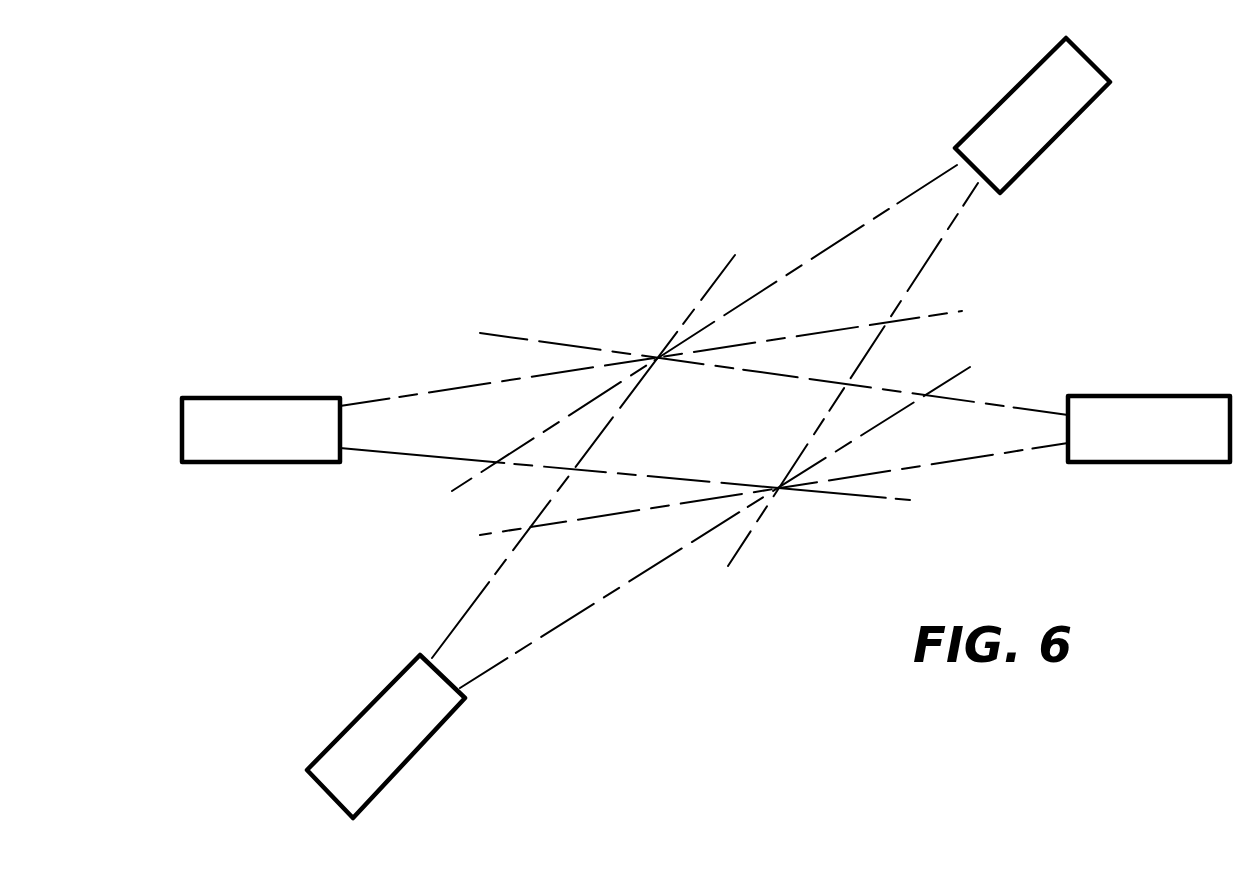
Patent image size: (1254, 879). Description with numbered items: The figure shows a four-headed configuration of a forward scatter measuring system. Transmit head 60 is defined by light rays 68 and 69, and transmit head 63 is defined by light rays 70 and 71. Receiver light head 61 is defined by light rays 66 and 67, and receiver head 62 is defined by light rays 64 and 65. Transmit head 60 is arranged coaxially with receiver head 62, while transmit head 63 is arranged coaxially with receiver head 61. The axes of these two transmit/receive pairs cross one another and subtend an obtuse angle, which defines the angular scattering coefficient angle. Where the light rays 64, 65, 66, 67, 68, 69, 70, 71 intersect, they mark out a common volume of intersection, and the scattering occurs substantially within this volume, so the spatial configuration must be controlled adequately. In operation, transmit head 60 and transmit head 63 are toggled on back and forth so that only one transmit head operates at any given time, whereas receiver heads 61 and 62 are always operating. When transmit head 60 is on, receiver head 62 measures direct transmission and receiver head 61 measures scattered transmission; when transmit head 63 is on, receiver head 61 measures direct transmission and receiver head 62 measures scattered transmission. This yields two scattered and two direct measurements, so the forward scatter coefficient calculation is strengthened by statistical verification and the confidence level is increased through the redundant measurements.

The transmit head 60 is at (265, 386).
The receiver light head 61 is at (1010, 86).
The receiver head 62 is at (1157, 385).
The transmit head 63 is at (361, 695).
The light ray 64 is at (1028, 407).
The light ray 65 is at (1048, 448).
The light ray 66 is at (897, 203).
The light ray 67 is at (968, 208).
The light ray 68 is at (435, 388).
The light ray 69 is at (388, 452).
The light ray 70 is at (490, 583).
The light ray 71 is at (547, 635).